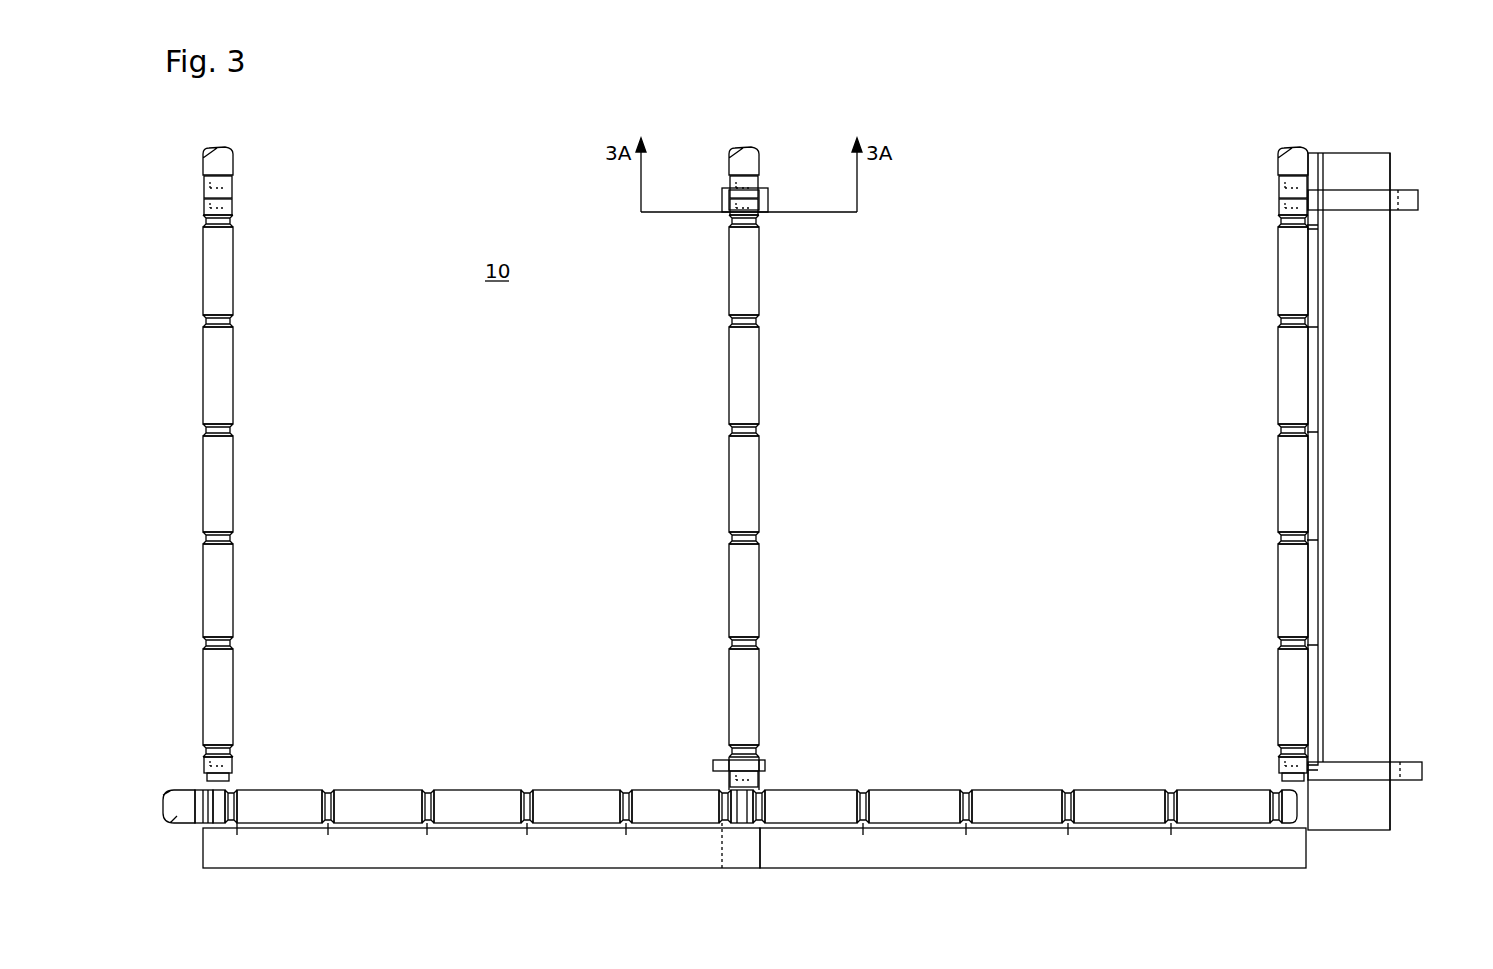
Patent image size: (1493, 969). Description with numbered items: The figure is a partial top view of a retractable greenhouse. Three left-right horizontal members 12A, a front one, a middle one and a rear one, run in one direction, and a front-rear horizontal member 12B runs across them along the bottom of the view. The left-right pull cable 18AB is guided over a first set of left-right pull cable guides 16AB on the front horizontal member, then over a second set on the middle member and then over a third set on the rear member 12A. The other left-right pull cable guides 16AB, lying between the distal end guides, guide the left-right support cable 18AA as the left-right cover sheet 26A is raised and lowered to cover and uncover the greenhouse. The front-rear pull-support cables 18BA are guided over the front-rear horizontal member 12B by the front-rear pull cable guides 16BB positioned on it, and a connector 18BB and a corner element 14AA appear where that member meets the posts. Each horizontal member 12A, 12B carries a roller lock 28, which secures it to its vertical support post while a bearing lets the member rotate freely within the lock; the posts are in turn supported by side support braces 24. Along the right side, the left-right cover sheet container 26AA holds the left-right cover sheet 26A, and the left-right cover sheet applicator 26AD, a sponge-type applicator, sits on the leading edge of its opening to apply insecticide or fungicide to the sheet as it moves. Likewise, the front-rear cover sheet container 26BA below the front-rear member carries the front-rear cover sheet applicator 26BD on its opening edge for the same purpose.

The left-right horizontal member 12A is at (214, 240).
The front-rear horizontal member 12B is at (655, 815).
The corner connector 14AA is at (1285, 778).
The left-right pull cable guides 16AB is at (233, 430).
The front-rear pull cable guides 16BB is at (425, 790).
The left-right support cable 18AA is at (1335, 342).
The left-right pull cable 18AB is at (1318, 225).
The front-rear pull-support cables 18BA is at (427, 832).
The rail end connector 18BB is at (238, 830).
The side support brace 24 is at (1418, 200).
The left-right cover sheet 26A is at (1393, 491).
The left-right cover sheet container 26AA is at (1392, 530).
The left-right cover sheet applicator 26AD is at (1323, 488).
The front-rear cover sheet container 26BA is at (498, 855).
The front-rear cover sheet applicator 26BD is at (1048, 835).
The roller lock 28 is at (775, 190).